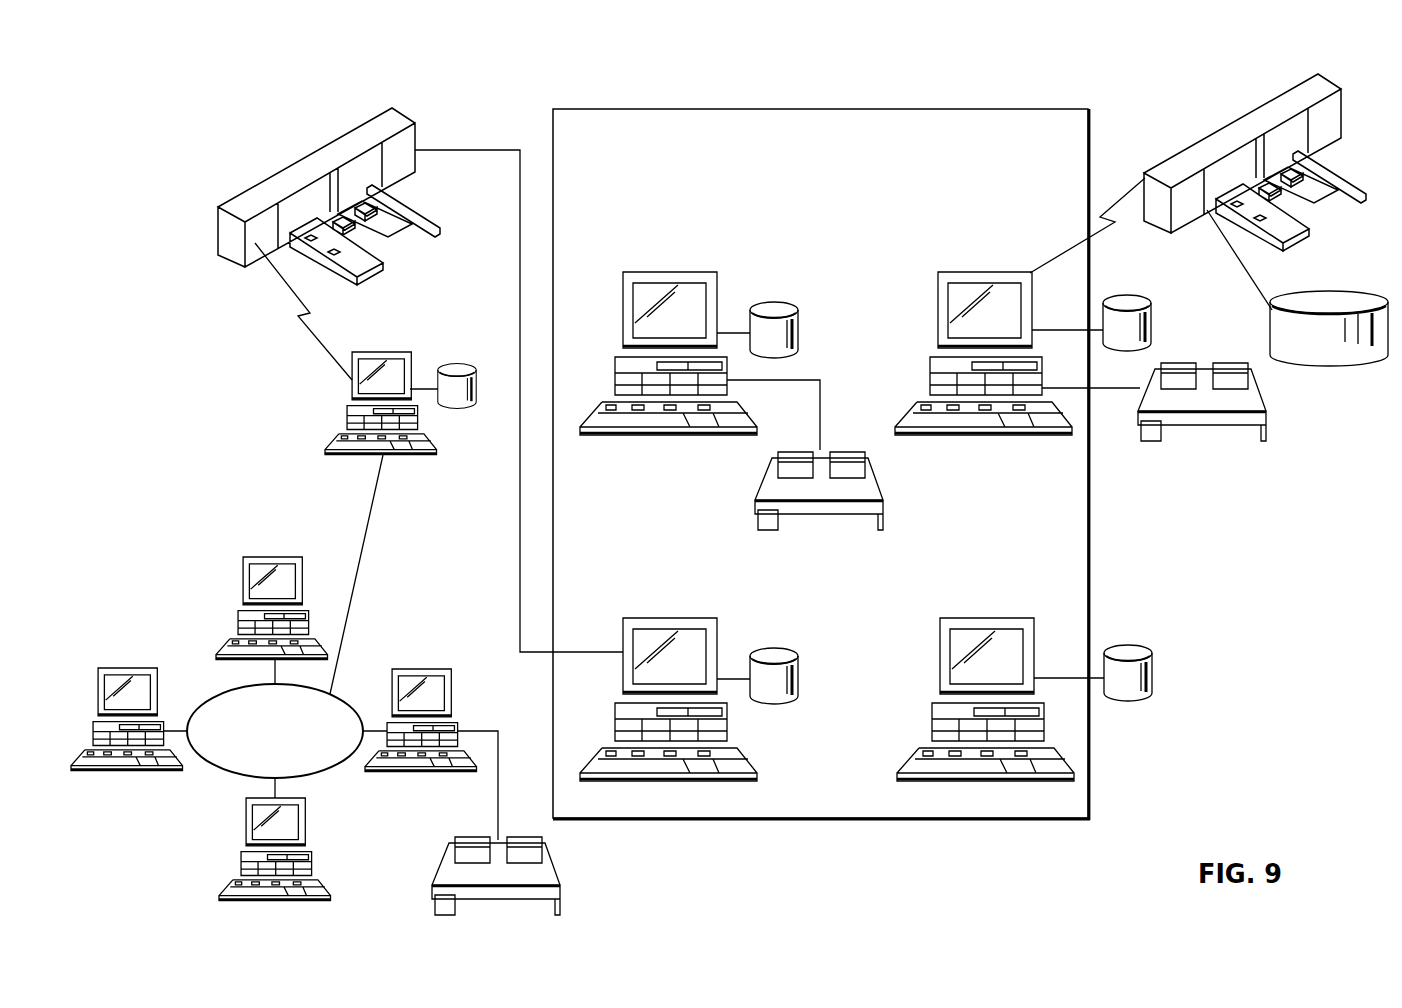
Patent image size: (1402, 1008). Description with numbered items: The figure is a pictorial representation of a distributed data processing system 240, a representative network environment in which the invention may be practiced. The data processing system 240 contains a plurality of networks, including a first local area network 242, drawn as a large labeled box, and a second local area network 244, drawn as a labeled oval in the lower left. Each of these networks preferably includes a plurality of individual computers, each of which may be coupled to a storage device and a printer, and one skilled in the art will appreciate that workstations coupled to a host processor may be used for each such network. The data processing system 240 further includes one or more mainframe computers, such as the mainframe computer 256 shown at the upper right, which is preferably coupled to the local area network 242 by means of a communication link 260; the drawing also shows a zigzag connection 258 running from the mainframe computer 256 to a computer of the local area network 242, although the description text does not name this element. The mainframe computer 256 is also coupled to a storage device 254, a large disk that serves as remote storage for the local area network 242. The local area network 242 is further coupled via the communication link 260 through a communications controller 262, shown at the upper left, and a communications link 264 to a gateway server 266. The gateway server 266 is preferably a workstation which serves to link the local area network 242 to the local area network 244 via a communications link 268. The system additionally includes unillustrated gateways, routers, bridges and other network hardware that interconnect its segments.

The distributed data processing system 240 is at (538, 111).
The local area network 242 is at (700, 180).
The local area network 244 is at (229, 774).
The storage device 254 is at (1323, 347).
The mainframe computer 256 is at (1167, 172).
The communication link 258 is at (1118, 203).
The communication link 260 is at (520, 292).
The communications controller 262 is at (292, 172).
The communications link 264 is at (312, 347).
The gateway server 266 is at (395, 352).
The communications link 268 is at (368, 538).